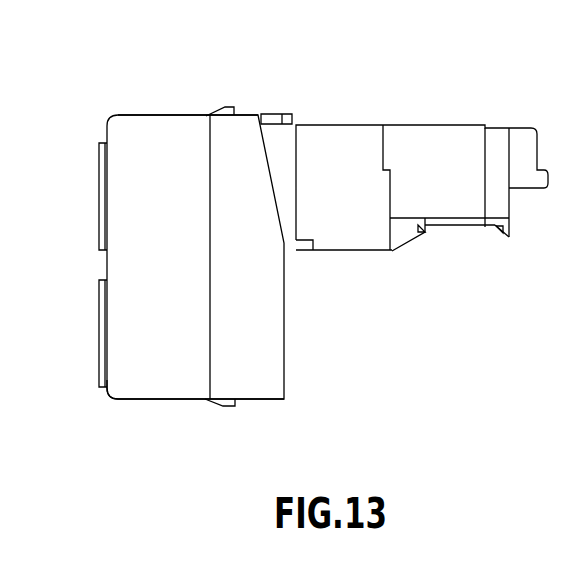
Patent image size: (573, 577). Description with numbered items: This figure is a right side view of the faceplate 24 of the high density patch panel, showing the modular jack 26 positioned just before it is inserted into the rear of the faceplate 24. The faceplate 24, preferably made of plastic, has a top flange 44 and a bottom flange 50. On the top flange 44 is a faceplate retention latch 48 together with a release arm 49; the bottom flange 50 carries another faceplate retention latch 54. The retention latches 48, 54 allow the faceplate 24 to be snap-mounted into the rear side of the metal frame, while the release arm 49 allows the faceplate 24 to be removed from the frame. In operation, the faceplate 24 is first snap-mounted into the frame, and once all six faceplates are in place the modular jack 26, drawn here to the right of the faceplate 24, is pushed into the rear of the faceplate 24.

The faceplate 24 is at (110, 117).
The top flange 44 is at (157, 115).
The faceplate retention latch 48 is at (227, 107).
The release arm 49 is at (275, 113).
The modular jack 26 is at (353, 125).
The bottom flange 50 is at (137, 400).
The faceplate retention latch 54 is at (223, 407).